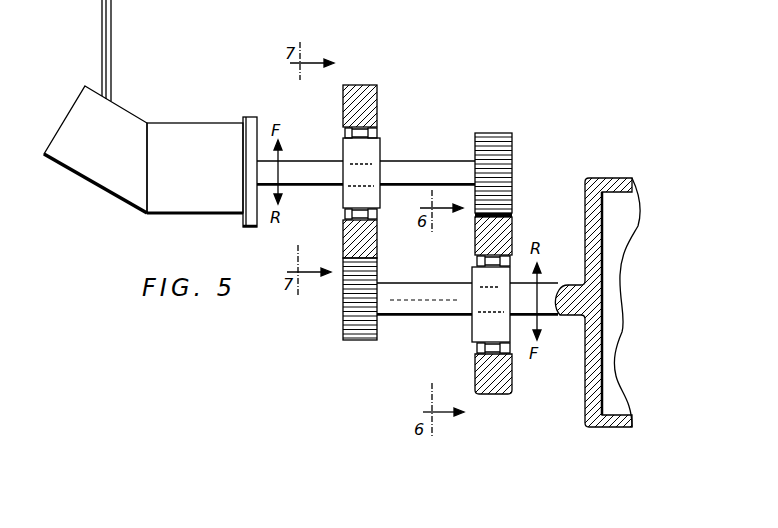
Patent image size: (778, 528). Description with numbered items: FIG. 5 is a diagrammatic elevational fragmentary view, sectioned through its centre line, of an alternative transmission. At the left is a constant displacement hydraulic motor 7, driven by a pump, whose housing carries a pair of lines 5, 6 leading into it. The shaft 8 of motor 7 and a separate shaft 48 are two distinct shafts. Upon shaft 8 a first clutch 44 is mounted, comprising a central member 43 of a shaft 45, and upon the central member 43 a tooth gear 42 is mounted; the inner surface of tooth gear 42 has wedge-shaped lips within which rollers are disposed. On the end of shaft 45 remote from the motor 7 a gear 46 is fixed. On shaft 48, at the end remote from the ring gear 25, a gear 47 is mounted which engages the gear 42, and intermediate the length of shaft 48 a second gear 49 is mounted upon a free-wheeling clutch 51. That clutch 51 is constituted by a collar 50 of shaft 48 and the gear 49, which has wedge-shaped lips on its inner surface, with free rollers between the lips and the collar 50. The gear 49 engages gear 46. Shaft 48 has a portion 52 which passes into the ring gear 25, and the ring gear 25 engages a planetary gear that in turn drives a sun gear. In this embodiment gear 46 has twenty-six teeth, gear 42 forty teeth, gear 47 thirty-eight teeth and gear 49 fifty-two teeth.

The control rod 5 is at (126, 50).
The control rod 6 is at (110, 53).
The constant displacement hydraulic motor 7 is at (110, 110).
The shaft 8 is at (308, 162).
The ring gear 25 is at (607, 182).
The tooth gear 42 is at (372, 100).
The central member 43 is at (368, 157).
The first clutch 44 is at (372, 135).
The shaft 45 is at (447, 168).
The gear 46 is at (502, 142).
The gear 47 is at (350, 325).
The shaft 48 is at (410, 307).
The second gear 49 is at (502, 380).
The collar 50 is at (483, 327).
The free-wheeling clutch 51 is at (476, 259).
The portion 52 is at (553, 291).